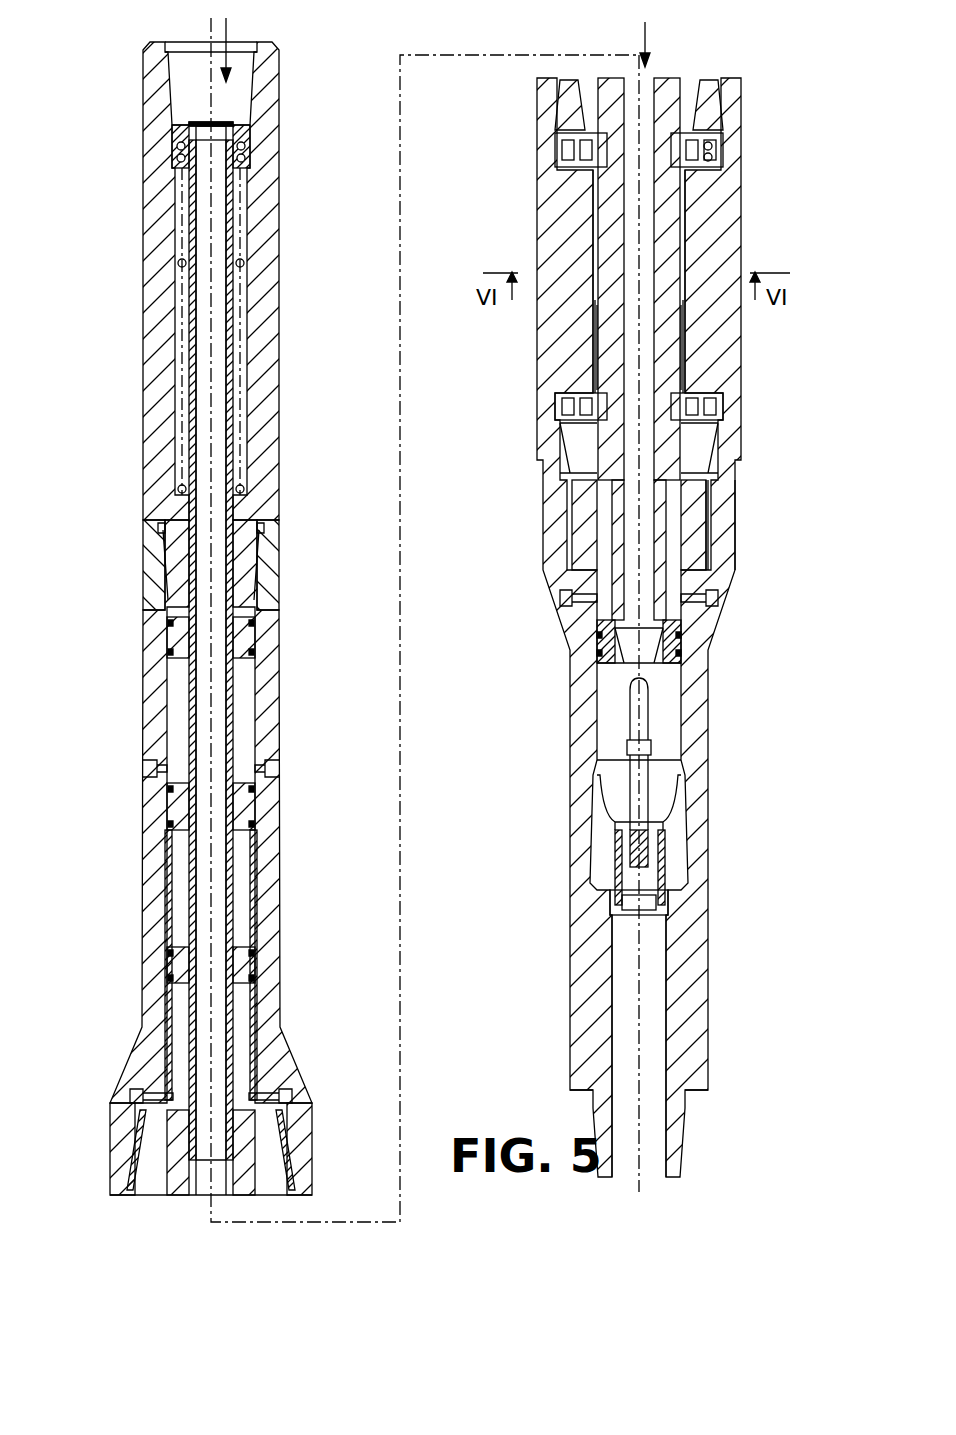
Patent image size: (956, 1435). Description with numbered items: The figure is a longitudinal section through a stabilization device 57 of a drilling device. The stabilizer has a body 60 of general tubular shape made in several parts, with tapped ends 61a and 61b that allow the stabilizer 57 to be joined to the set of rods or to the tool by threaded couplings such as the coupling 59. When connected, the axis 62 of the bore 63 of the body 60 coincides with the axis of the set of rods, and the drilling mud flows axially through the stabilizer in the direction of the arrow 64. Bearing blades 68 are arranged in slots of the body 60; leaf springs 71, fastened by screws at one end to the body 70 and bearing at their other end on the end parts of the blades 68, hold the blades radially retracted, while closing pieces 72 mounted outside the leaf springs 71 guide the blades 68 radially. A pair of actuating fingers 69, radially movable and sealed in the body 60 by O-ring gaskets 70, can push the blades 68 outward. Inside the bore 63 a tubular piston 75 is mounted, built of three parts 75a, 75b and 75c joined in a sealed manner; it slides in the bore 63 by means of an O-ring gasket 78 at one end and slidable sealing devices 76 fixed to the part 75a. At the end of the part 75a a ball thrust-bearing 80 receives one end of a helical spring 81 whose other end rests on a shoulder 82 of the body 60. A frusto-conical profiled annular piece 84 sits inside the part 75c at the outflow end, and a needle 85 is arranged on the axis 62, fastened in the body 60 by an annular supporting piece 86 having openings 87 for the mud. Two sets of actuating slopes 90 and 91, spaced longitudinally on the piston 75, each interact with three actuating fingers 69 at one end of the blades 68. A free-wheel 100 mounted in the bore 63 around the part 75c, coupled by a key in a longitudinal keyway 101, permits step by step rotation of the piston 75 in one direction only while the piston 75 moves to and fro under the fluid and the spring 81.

The stabilization device 57 is at (528, 458).
The threaded coupling 59 is at (592, 984).
The body 60 is at (265, 465).
The tapped end 61a is at (258, 93).
The tapped end 61b is at (593, 852).
The axis 62 is at (213, 208).
The bore 63 is at (217, 385).
The arrow 64 is at (230, 33).
The bearing blade 68 is at (558, 343).
The actuating finger 69 is at (568, 148).
The O-ring gasket 70 is at (712, 154).
The leaf spring 71 is at (715, 510).
The closing piece 72 is at (720, 548).
The tubular piston 75 is at (668, 228).
The piston part 75a is at (230, 736).
The piston part 75b is at (250, 1135).
The piston part 75c is at (670, 631).
The slidable sealing device 76 is at (252, 637).
The O-ring gasket 78 is at (685, 654).
The ball thrust-bearing 80 is at (246, 150).
The helical spring 81 is at (244, 263).
The shoulder 82 is at (244, 490).
The profiled annular piece 84 is at (600, 654).
The needle 85 is at (632, 796).
The annular supporting piece 86 is at (612, 902).
The opening 87 is at (656, 845).
The set of actuating slopes 90 is at (598, 100).
The set of actuating slopes 91 is at (676, 352).
The free-wheel 100 is at (706, 580).
The longitudinal keyway 101 is at (607, 518).